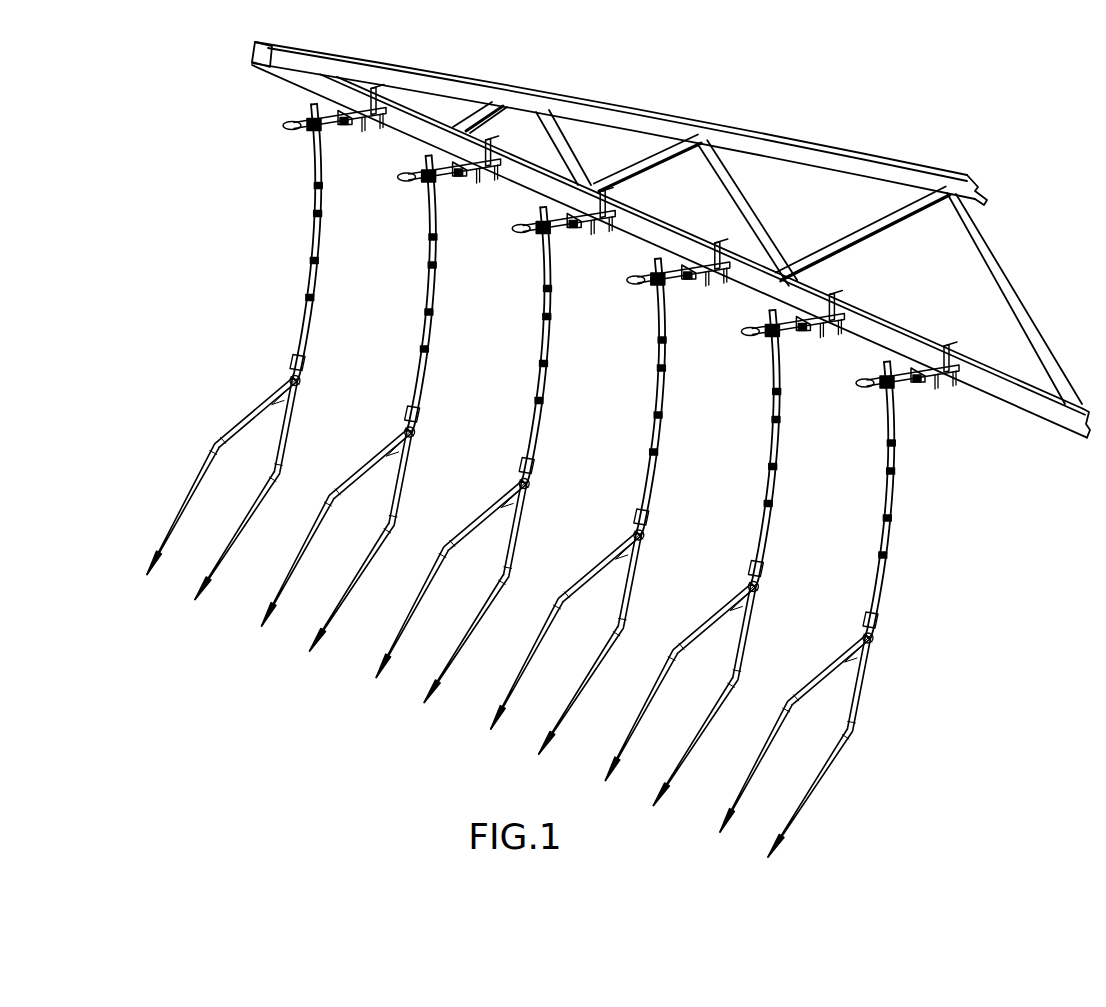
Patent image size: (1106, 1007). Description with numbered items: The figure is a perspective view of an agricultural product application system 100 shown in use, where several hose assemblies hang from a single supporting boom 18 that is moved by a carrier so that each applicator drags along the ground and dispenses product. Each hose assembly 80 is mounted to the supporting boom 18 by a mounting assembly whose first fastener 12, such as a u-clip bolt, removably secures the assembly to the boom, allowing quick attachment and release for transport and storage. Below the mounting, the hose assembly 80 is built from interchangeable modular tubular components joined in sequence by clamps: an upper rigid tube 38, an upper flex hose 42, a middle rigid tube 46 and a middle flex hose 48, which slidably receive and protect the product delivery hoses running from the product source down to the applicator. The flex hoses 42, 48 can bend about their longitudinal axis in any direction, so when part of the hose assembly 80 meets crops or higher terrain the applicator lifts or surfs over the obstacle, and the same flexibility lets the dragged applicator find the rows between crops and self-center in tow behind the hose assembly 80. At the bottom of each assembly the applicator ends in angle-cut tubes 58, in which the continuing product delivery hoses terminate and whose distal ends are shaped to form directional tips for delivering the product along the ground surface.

The agricultural product application system 100 is at (990, 492).
The supporting boom 18 is at (918, 154).
The first fastener 12 is at (553, 470).
The upper rigid tube 38 is at (578, 331).
The upper flex hose 42 is at (575, 328).
The middle rigid tube 46 is at (574, 392).
The middle flex hose 48 is at (563, 480).
The hose assembly 80 is at (548, 422).
The angle-cut tube 58 is at (509, 617).